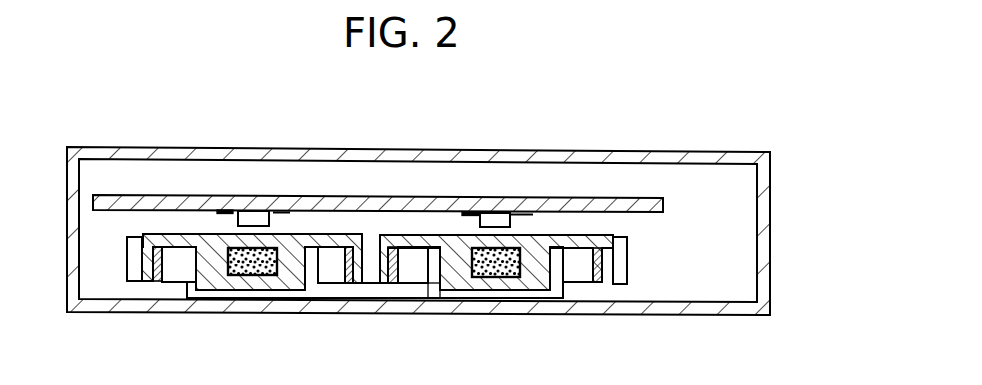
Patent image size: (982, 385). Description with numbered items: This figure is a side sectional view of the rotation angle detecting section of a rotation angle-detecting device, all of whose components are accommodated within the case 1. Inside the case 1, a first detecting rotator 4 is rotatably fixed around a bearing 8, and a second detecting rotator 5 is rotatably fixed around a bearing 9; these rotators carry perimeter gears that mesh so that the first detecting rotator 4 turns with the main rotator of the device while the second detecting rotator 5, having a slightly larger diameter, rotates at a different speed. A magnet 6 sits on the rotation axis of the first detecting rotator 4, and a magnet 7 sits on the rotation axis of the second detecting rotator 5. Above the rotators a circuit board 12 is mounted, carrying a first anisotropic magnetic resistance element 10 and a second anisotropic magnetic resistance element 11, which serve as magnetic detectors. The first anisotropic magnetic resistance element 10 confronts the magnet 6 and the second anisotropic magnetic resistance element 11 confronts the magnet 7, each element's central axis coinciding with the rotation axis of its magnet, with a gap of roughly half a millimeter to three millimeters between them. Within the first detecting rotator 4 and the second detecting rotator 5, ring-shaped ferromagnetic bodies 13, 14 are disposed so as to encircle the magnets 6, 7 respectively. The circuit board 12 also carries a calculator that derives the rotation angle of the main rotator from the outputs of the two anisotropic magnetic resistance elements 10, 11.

The case 1 is at (720, 155).
The first detecting rotator 4 is at (221, 275).
The second detecting rotator 5 is at (531, 279).
The magnet 6 is at (262, 276).
The magnet 7 is at (488, 278).
The bearing 8 is at (196, 272).
The bearing 9 is at (437, 294).
The first anisotropic magnetic resistance element 10 is at (249, 211).
The second anisotropic magnetic resistance element 11 is at (503, 213).
The circuit board 12 is at (393, 200).
The ring-shaped ferromagnetic body 13 is at (153, 284).
The ring-shaped ferromagnetic body 14 is at (598, 284).